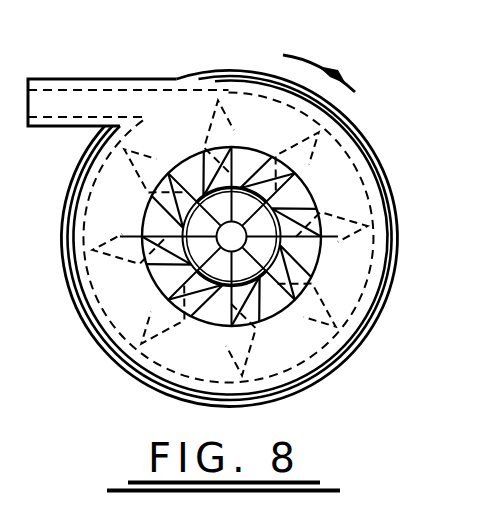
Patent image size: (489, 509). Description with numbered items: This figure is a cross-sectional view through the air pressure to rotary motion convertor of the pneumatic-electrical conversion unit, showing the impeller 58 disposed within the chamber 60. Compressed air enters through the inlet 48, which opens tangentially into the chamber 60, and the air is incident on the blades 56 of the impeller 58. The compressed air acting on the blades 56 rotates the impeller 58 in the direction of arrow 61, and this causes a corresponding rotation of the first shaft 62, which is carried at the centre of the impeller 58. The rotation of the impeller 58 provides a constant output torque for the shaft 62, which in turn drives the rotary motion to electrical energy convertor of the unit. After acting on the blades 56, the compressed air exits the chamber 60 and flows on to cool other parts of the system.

The inlet 48 is at (85, 90).
The blades 56 is at (224, 128).
The impeller 58 is at (128, 291).
The chamber 60 is at (338, 193).
The arrow 61 is at (304, 59).
The first shaft 62 is at (280, 209).